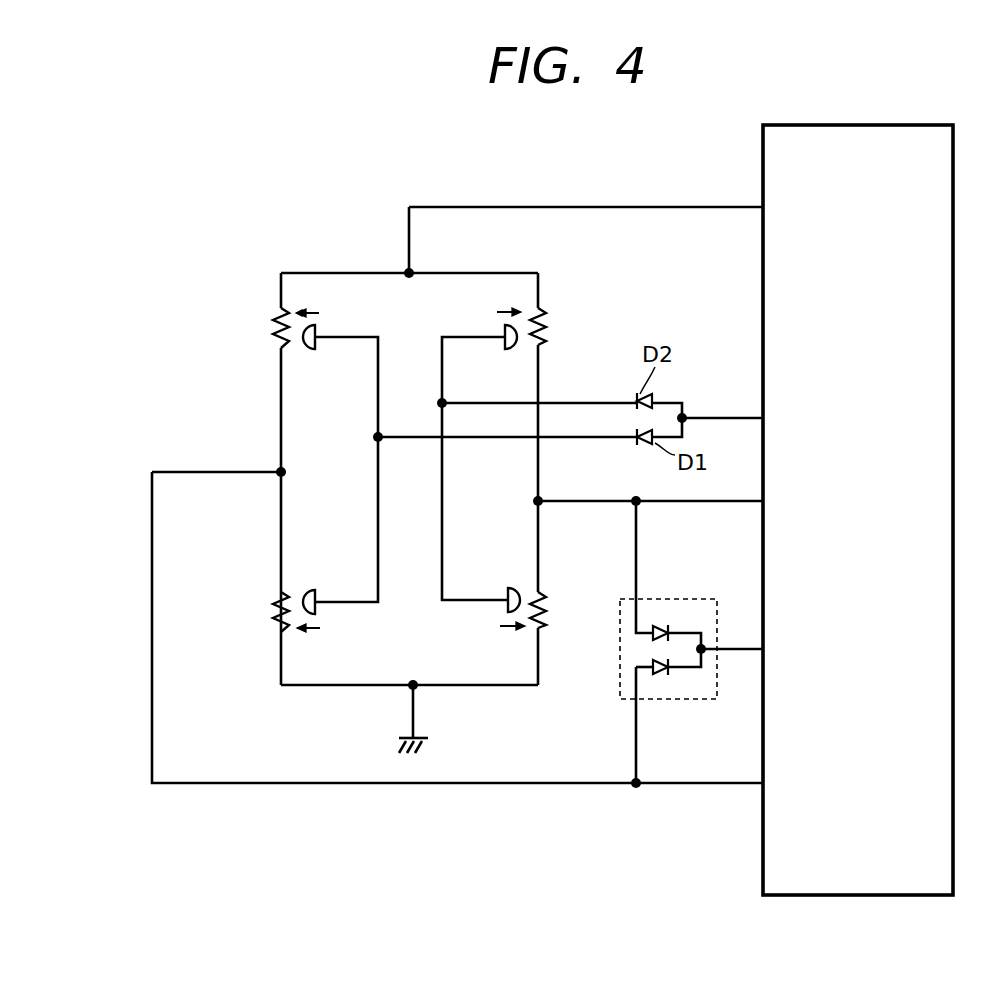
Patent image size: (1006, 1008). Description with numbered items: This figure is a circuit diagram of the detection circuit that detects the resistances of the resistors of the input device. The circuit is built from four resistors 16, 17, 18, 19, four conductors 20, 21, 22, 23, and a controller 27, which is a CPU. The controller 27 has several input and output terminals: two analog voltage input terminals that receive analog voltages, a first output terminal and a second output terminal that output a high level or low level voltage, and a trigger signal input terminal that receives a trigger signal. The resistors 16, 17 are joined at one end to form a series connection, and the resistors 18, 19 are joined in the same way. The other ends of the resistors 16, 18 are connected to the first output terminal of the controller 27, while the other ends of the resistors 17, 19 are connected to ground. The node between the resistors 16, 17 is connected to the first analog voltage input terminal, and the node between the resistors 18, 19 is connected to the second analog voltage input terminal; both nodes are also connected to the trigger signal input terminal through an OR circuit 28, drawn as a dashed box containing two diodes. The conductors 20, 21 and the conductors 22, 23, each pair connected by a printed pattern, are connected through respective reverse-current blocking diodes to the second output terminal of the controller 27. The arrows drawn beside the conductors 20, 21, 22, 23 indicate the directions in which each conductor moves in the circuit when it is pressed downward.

The resistor 16 is at (276, 340).
The resistor 17 is at (277, 624).
The resistor 18 is at (545, 345).
The resistor 19 is at (545, 628).
The conductor 20 is at (318, 342).
The conductor 21 is at (320, 592).
The conductor 22 is at (502, 346).
The conductor 23 is at (505, 592).
The controller (CPU) 27 is at (953, 792).
The OR circuit 28 is at (690, 700).